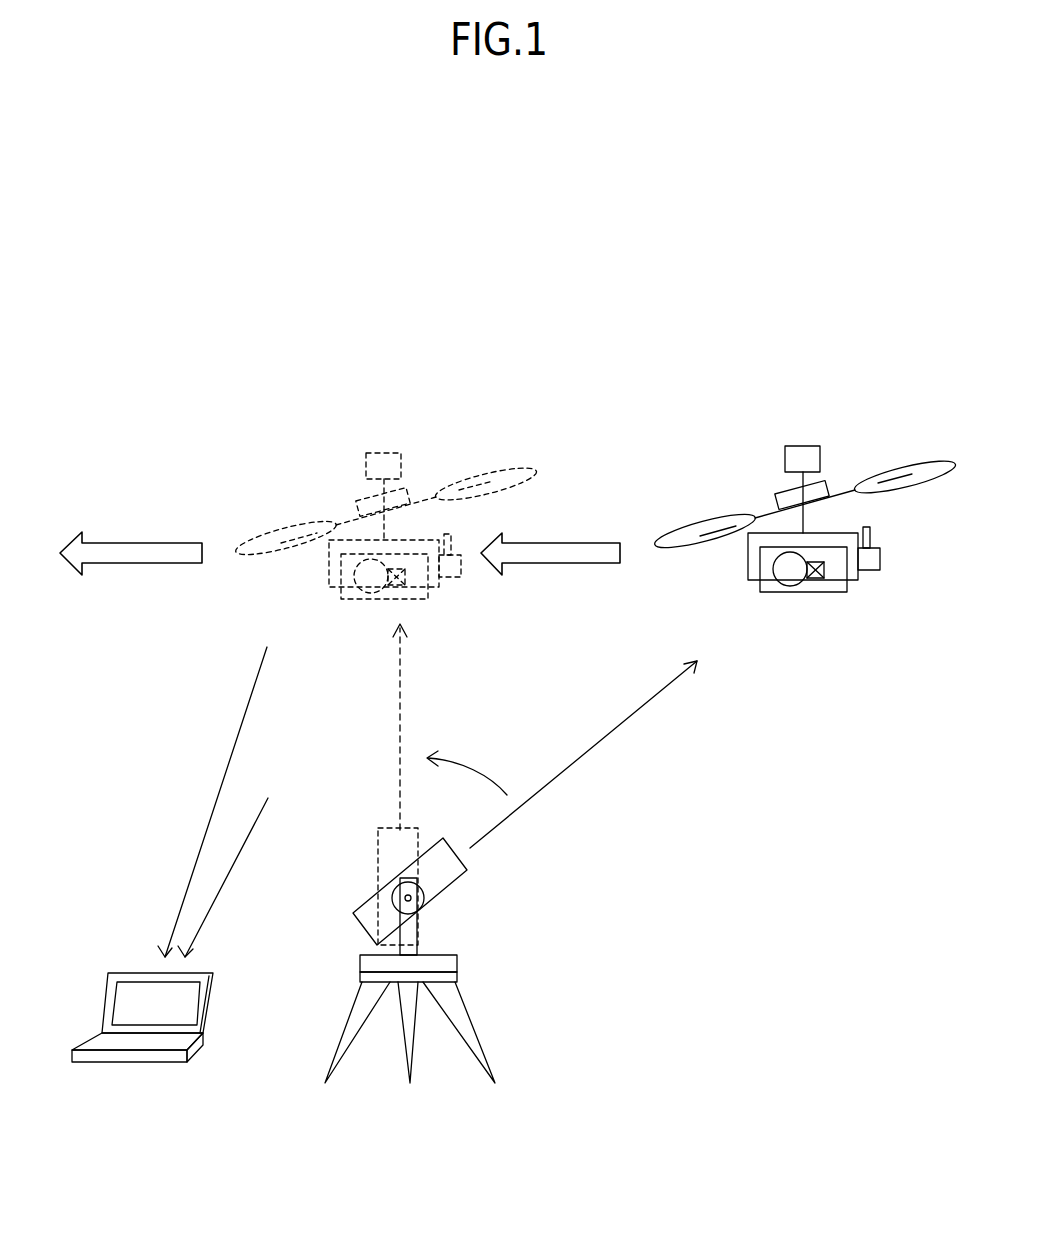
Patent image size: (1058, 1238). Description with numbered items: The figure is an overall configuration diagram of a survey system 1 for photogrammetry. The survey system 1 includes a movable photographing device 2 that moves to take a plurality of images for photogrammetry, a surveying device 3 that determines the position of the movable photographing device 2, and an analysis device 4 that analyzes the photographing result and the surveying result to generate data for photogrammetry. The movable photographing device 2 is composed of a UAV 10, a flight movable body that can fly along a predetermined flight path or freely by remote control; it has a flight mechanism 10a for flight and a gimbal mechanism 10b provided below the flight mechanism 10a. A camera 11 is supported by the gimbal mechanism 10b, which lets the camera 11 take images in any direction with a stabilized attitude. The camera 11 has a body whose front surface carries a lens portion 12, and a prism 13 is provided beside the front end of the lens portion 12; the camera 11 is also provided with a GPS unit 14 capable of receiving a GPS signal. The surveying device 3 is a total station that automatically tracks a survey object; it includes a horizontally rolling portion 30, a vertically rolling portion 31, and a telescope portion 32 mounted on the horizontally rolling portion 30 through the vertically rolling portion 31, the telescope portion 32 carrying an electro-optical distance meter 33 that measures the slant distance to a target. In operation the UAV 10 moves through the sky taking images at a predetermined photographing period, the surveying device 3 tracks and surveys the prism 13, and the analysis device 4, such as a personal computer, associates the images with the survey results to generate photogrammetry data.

The survey system 1 is at (629, 280).
The movable photographing device 2 is at (796, 413).
The surveying device 3 is at (338, 885).
The analysis device 4 is at (128, 938).
The UAV 10 is at (830, 483).
The flight mechanism 10a is at (776, 493).
The gimbal mechanism 10b is at (748, 556).
The camera 11 is at (850, 592).
The lens portion 12 is at (776, 586).
The prism 13 is at (815, 580).
The GPS unit 14 is at (880, 558).
The horizontally rolling portion 30 is at (455, 955).
The vertically rolling portion 31 is at (378, 921).
The telescope portion 32 is at (453, 888).
The electro-optical distance meter (EDM) 33 is at (410, 891).